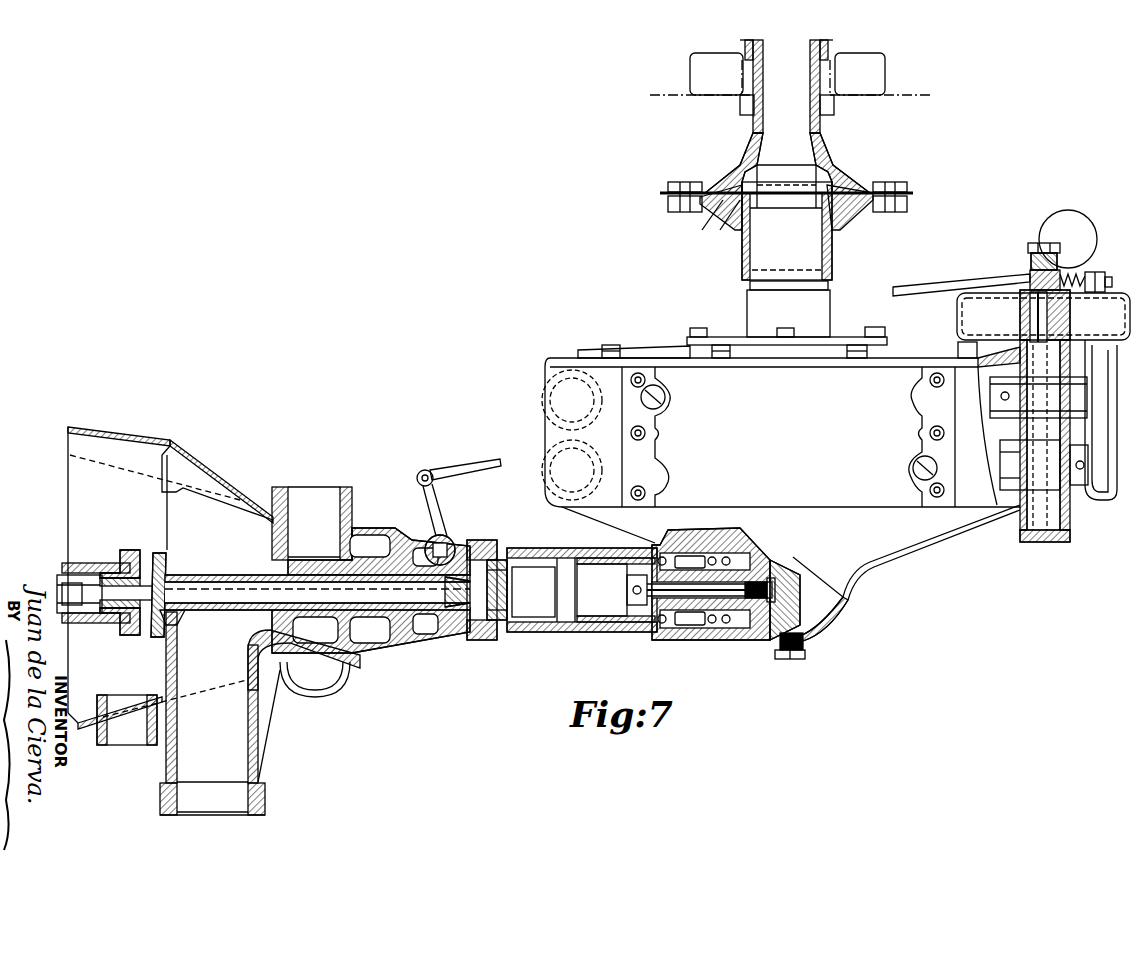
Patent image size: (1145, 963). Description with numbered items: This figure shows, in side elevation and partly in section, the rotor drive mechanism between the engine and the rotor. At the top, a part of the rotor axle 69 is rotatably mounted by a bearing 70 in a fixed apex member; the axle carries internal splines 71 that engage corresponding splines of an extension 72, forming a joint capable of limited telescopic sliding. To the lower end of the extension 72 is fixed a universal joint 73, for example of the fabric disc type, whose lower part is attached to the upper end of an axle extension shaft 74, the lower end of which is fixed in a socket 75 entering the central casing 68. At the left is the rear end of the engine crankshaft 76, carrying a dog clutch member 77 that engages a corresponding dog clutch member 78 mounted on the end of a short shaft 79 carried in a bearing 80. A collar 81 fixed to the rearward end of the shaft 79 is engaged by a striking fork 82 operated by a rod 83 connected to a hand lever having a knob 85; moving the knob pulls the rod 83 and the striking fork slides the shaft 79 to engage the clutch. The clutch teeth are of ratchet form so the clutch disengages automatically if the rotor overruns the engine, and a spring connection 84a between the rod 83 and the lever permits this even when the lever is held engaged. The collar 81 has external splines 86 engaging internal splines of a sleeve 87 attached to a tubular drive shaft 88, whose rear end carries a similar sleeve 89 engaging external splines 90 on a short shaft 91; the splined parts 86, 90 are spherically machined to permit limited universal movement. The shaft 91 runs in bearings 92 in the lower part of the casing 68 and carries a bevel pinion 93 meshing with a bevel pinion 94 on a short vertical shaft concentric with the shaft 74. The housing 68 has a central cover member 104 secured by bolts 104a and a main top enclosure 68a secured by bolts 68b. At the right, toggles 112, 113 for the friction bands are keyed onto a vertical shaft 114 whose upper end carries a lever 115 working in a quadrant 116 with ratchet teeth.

The central casing 68 is at (783, 440).
The main top enclosure 68a is at (638, 356).
The bolts 68b is at (602, 350).
The rotor axle 69 is at (843, 47).
The bearing 70 is at (702, 70).
The internal splines 71 is at (752, 92).
The extension 72 is at (808, 75).
The universal joint 73 is at (737, 200).
The axle extension shaft 74 is at (825, 250).
The socket 75 is at (760, 299).
The rear end of engine crankshaft 76 is at (62, 580).
The dog clutch member 77 is at (125, 635).
The dog clutch member 78 is at (160, 637).
The short shaft 79 is at (178, 575).
The bearing 80 is at (255, 622).
The collar 81 is at (470, 610).
The striking fork 82 is at (430, 540).
The rod 83 is at (456, 466).
The spring connection 84a is at (1088, 275).
The knob 85 is at (1072, 230).
The external splines 86 is at (495, 560).
The sleeve 87 is at (472, 540).
The tubular drive shaft 88 is at (525, 632).
The sleeve 89 is at (580, 556).
The external splines 90 is at (627, 600).
The short shaft 91 is at (690, 598).
The bearings 92 is at (662, 624).
The bevel pinion 93 is at (757, 625).
The bevel pinion 94 is at (760, 548).
The central cover member 104 is at (882, 336).
The bolts 104a is at (698, 328).
The toggle 112 is at (1040, 395).
The toggle 113 is at (1020, 462).
The vertical shaft 114 is at (1043, 512).
The lever 115 is at (1030, 305).
The quadrant 116 is at (1105, 340).